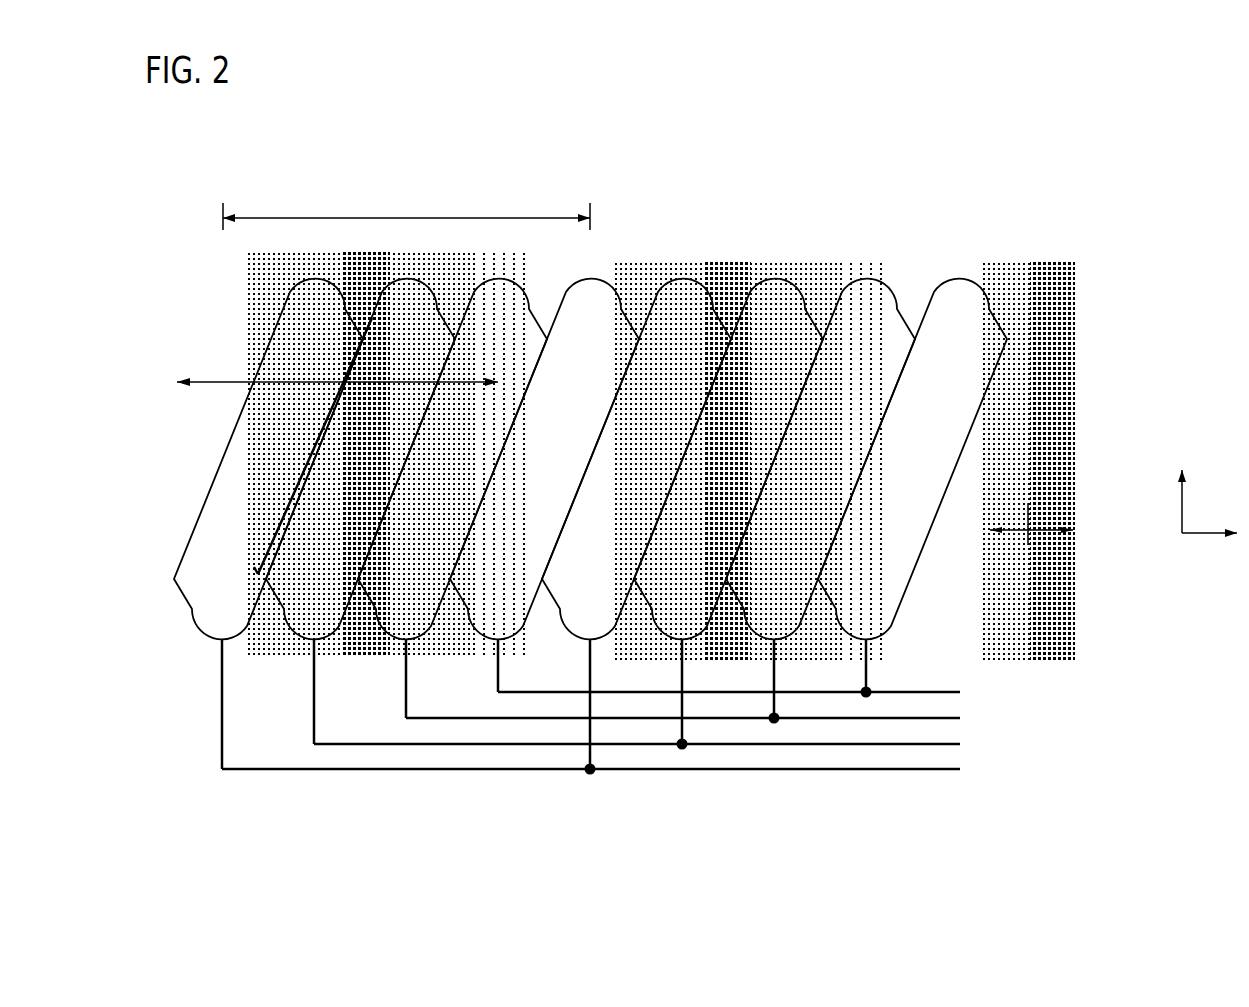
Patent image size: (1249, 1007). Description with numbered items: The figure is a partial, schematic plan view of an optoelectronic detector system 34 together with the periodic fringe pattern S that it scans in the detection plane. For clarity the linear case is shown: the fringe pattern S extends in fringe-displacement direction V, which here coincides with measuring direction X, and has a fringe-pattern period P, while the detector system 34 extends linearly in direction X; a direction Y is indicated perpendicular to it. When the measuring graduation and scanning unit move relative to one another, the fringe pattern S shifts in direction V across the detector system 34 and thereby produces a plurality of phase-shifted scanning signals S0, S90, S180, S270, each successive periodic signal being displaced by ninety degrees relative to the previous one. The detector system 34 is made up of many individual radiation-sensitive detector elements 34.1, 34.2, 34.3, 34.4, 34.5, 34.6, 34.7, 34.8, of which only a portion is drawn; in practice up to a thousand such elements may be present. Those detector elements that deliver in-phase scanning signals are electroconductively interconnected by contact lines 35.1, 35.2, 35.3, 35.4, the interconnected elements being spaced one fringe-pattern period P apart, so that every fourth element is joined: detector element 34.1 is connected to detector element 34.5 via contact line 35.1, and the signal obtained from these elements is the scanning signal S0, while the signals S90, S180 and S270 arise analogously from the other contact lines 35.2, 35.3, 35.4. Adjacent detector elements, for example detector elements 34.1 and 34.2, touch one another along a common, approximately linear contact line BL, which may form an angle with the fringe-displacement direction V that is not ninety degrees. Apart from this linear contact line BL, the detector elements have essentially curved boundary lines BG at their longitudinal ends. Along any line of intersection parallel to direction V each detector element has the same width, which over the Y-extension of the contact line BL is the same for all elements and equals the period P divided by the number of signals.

The optoelectronic detector system 34 is at (195, 485).
The detector element 34.1 is at (203, 590).
The detector element 34.2 is at (308, 606).
The detector element 34.3 is at (400, 608).
The detector element 34.4 is at (594, 316).
The detector element 34.5 is at (682, 312).
The detector element 34.6 is at (777, 315).
The detector element 34.7 is at (876, 314).
The detector element 34.8 is at (953, 313).
The contact line 35.1 is at (268, 769).
The contact line 35.2 is at (378, 744).
The contact line 35.3 is at (490, 718).
The contact line 35.4 is at (555, 692).
The curved boundary line BG is at (302, 279).
The contact line BL is at (313, 446).
The periodic fringe pattern S is at (1015, 300).
The scanning signal S0 is at (1048, 843).
The scanning signal S90 is at (1048, 789).
The scanning signal S180 is at (1045, 737).
The scanning signal S270 is at (1048, 686).
The fringe-pattern period P is at (406, 201).
The fringe-displacement direction V is at (1031, 517).
The measuring direction X is at (707, 478).
The y-direction Y is at (1197, 495).